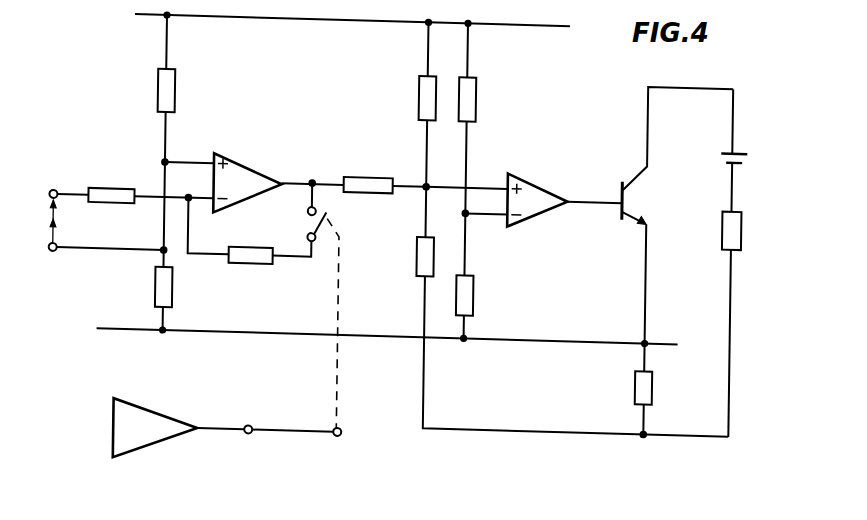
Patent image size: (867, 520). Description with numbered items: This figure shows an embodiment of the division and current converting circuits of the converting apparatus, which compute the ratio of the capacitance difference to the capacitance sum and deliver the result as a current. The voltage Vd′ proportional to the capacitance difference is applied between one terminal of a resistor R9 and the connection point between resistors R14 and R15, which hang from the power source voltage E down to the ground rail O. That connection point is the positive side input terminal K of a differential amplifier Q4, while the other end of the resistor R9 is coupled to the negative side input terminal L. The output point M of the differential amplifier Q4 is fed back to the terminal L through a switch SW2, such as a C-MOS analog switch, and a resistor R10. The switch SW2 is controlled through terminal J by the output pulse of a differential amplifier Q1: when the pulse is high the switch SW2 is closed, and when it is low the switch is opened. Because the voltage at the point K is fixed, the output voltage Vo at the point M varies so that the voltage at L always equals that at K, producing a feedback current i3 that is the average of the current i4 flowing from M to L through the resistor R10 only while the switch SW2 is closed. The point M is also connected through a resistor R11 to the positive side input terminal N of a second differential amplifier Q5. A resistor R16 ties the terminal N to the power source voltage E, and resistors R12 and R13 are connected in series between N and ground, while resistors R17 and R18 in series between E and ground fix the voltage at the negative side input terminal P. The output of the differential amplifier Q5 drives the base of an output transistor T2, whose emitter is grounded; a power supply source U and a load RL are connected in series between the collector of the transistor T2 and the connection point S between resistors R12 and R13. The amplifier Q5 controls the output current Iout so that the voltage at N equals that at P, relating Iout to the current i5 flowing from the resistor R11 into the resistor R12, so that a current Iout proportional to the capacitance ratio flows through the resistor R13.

The power source voltage E is at (362, 24).
The 0 V ground rail terminal O is at (408, 329).
The resistor R14 is at (174, 77).
The positive side input terminal K is at (188, 147).
The resistor R15 is at (160, 300).
The voltage proportional to the capacitance difference Vd′ is at (56, 220).
The resistor R9 is at (121, 190).
The feedback current i3 is at (130, 215).
The negative side input terminal L is at (204, 211).
The differential amplifier Q4 is at (250, 171).
The resistor R10 is at (236, 260).
The switch SW2 is at (309, 227).
The output point M is at (313, 173).
The output voltage Vo is at (317, 167).
The resistor R11 is at (378, 171).
The current i4 is at (323, 185).
The current i5 is at (421, 183).
The positive side input terminal N is at (465, 174).
The resistor R16 is at (420, 82).
The resistor R12 is at (421, 252).
The resistor R17 is at (477, 82).
The negative side input terminal P is at (484, 229).
The resistor R18 is at (477, 280).
The differential amplifier Q5 is at (543, 169).
The output transistor T2 is at (643, 190).
The power supply source U is at (730, 137).
The load RL is at (726, 217).
The resistor R13 is at (640, 373).
The output current Iout is at (660, 337).
The connection point S is at (649, 422).
The differential amplifier Q1 is at (158, 416).
The control terminal J is at (292, 415).